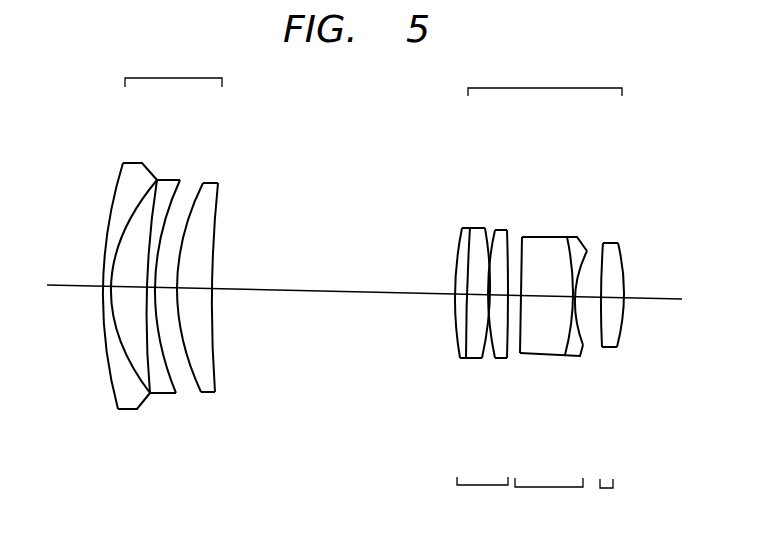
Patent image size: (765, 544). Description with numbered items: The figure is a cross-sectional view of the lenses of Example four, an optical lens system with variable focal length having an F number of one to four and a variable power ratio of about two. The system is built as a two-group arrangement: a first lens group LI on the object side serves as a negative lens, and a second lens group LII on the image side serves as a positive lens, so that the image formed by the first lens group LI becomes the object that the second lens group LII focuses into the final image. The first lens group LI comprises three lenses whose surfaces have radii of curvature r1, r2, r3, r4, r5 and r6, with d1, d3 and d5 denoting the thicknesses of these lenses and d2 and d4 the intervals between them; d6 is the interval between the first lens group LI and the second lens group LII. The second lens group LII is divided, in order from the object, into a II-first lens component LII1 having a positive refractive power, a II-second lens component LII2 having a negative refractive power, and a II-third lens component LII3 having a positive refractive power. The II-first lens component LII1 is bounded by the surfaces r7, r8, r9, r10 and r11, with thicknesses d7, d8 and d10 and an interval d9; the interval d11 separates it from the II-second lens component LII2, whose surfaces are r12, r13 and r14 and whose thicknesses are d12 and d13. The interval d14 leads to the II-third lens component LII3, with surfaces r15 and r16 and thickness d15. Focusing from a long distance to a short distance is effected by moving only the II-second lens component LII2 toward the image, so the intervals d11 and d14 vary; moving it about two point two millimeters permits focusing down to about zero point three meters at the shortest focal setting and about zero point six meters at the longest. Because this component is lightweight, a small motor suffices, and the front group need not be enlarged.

The radius of curvature of first lens surface r1 is at (121, 167).
The radius of curvature of second lens surface r2 is at (150, 188).
The radius of curvature of third lens surface r3 is at (167, 181).
The radius of curvature of fourth lens surface r4 is at (181, 190).
The radius of curvature of fifth lens surface r5 is at (202, 190).
The radius of curvature of sixth lens surface r6 is at (220, 195).
The radius of curvature of seventh lens surface r7 is at (461, 232).
The radius of curvature of eighth lens surface r8 is at (470, 227).
The radius of curvature of ninth lens surface r9 is at (487, 230).
The radius of curvature of tenth lens surface r10 is at (496, 232).
The radius of curvature of eleventh lens surface r11 is at (509, 235).
The radius of curvature of twelfth lens surface r12 is at (523, 240).
The radius of curvature of thirteenth lens surface r13 is at (567, 236).
The radius of curvature of fourteenth lens surface r14 is at (587, 250).
The radius of curvature of fifteenth lens surface r15 is at (603, 246).
The radius of curvature of sixteenth lens surface r16 is at (622, 252).
The lens thickness d1 is at (107, 290).
The lens-to-lens interval d2 is at (131, 290).
The lens thickness d3 is at (151, 290).
The lens-to-lens interval d4 is at (167, 290).
The lens thickness d5 is at (195, 290).
The lens-to-lens interval d6 is at (348, 293).
The lens thickness d7 is at (462, 297).
The lens thickness d8 is at (478, 297).
The lens-to-lens interval d9 is at (488, 297).
The lens thickness d10 is at (498, 297).
The lens-to-lens interval d11 is at (515, 297).
The lens thickness d12 is at (548, 297).
The lens thickness d13 is at (573, 297).
The lens-to-lens interval d14 is at (590, 297).
The lens thickness d15 is at (612, 297).
The first lens group LI is at (173, 68).
The second lens group LII is at (545, 78).
The II-first lens component LII1 is at (482, 498).
The II-second lens component LII2 is at (549, 499).
The II-third lens component LII3 is at (605, 499).